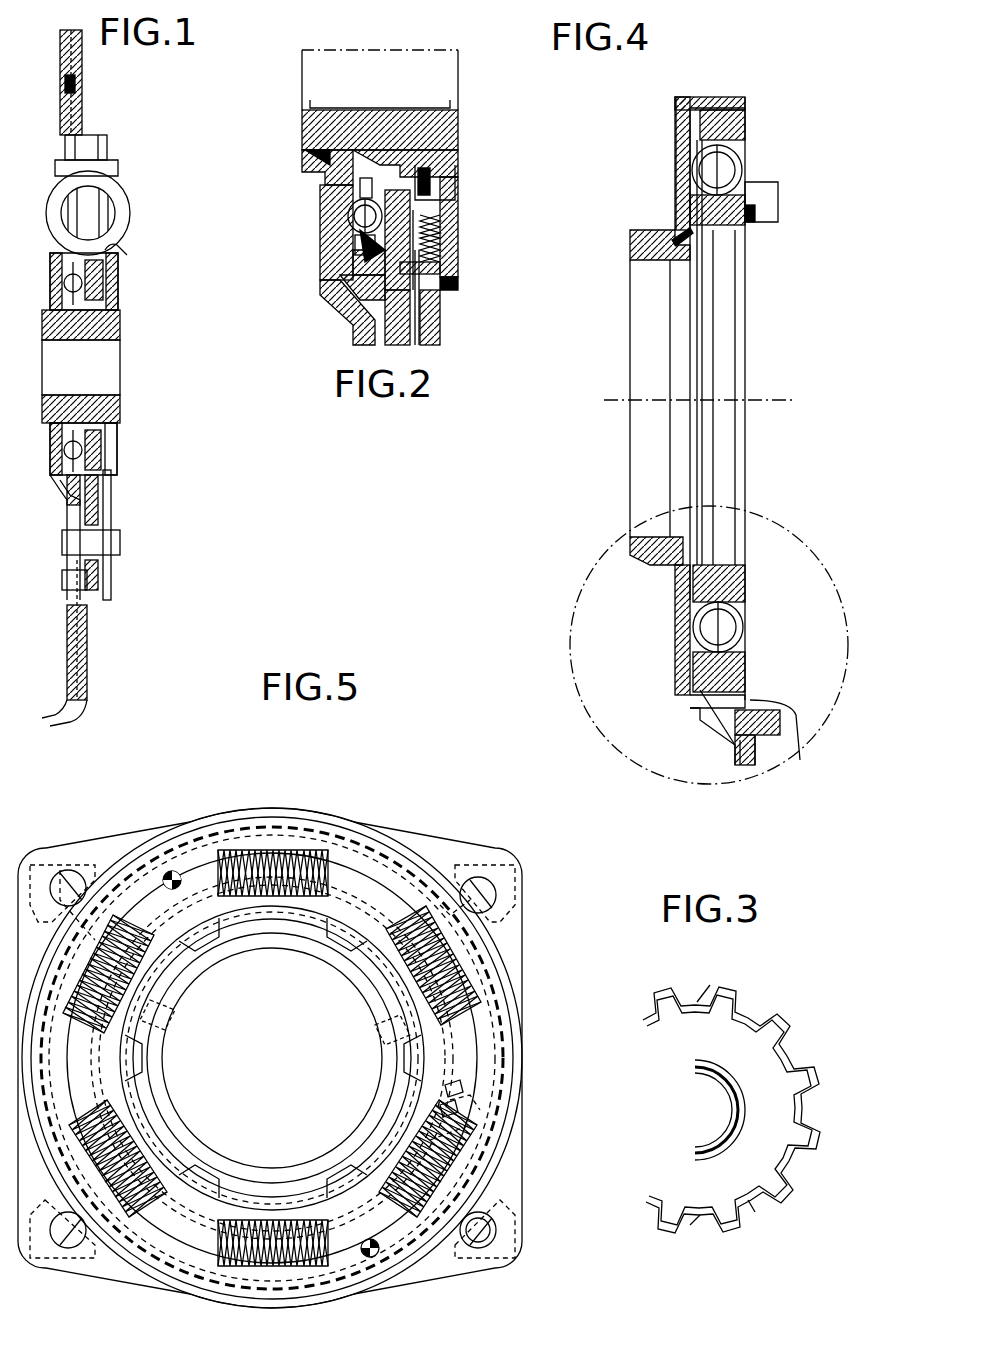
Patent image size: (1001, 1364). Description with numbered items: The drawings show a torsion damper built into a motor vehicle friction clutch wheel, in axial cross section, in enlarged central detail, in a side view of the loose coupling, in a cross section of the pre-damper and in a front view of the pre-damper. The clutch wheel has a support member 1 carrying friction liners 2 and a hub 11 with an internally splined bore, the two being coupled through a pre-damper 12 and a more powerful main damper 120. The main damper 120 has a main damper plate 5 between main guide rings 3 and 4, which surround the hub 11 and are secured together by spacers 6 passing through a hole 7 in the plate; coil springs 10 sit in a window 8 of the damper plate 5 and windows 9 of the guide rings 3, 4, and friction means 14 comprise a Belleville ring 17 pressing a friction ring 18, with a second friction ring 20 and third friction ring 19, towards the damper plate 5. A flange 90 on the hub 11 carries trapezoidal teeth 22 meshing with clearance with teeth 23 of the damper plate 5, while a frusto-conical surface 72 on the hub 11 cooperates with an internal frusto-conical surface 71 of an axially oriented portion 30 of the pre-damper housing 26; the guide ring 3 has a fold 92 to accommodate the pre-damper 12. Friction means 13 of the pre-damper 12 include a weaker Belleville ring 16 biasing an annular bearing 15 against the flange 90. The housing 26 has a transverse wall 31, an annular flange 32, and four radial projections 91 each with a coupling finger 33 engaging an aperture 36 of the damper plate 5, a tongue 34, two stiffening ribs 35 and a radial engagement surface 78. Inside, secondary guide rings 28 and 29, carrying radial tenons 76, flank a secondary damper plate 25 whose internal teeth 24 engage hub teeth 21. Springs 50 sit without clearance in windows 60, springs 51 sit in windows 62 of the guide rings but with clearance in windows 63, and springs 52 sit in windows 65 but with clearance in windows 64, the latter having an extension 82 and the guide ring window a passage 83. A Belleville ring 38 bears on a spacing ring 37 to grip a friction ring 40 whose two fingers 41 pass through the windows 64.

In FIG. 1, the support member 1 is at (78, 140).
In FIG. 1, the friction liners 2 is at (52, 718).
In FIG. 1, the main guide ring 3 is at (62, 488).
In FIG. 2, the main guide ring 3 is at (358, 300).
In FIG. 1, the main guide ring 4 is at (112, 565).
In FIG. 2, the main guide ring 4 is at (440, 315).
In FIG. 1, the main damper plate 5 is at (95, 595).
In FIG. 3, the main damper plate 5 is at (715, 968).
In FIG. 1, the spacers 6 is at (120, 530).
In FIG. 4, the spacers 6 is at (592, 718).
In FIG. 1, the hole 7 is at (100, 515).
In FIG. 1, the window 8 is at (105, 158).
In FIG. 1, the window 9 is at (115, 250).
In FIG. 1, the coil springs 10 is at (128, 205).
In FIG. 1, the hub 11 is at (122, 327).
In FIG. 2, the hub 11 is at (470, 148).
In FIG. 3, the hub 11 is at (715, 1037).
In FIG. 1, the pre-damper 12 is at (60, 262).
In FIG. 2, the pre-damper 12 is at (365, 288).
In FIG. 4, the pre-damper 12 is at (660, 190).
In FIG. 1, the friction means 13 is at (110, 428).
In FIG. 1, the friction means 14 is at (120, 440).
In FIG. 2, the annular bearing 15 is at (455, 175).
In FIG. 2, the axially acting resilient ring 16 is at (440, 200).
In FIG. 2, the axially acting resilient ring 17 is at (440, 238).
In FIG. 2, the friction ring 18 is at (445, 268).
In FIG. 2, the third friction ring 19 is at (460, 285).
In FIG. 2, the second friction ring 20 is at (448, 295).
In FIG. 3, the hub teeth 21 is at (748, 1205).
In FIG. 3, the trapezoidal teeth 22 is at (695, 990).
In FIG. 3, the teeth 23 is at (700, 1222).
In FIG. 5, the internal teeth 24 is at (260, 925).
In FIG. 4, the secondary damper plate 25 is at (725, 580).
In FIG. 4, the housing 26 is at (628, 550).
In FIG. 4, the secondary guide ring 28 is at (740, 135).
In FIG. 4, the secondary guide ring 29 is at (690, 700).
In FIG. 4, the axially oriented portion 30 is at (638, 232).
In FIG. 4, the transverse wall 31 is at (675, 140).
In FIG. 4, the annular flange 32 is at (710, 97).
In FIG. 4, the coupling fingers 33 is at (760, 745).
In FIG. 5, the coupling fingers 33 is at (478, 1245).
In FIG. 4, the tongues 34 is at (780, 712).
In FIG. 5, the tongues 34 is at (496, 1225).
In FIG. 4, the stiffening ribs 35 is at (718, 735).
In FIG. 5, the stiffening ribs 35 is at (32, 880).
In FIG. 2, the apertures 36 is at (372, 252).
In FIG. 4, the spacing ring 37 is at (728, 98).
In FIG. 4, the axially acting resilient means 38 is at (705, 715).
In FIG. 4, the friction ring 40 is at (680, 592).
In FIG. 5, the friction ring 40 is at (165, 1262).
In FIG. 5, the projections 41 is at (155, 1010).
In FIG. 5, the springs 50 is at (310, 848).
In FIG. 5, the springs 51 is at (410, 925).
In FIG. 5, the springs 52 is at (122, 915).
In FIG. 5, the windows 60 is at (235, 850).
In FIG. 5, the windows 62 is at (470, 985).
In FIG. 5, the windows 63 is at (480, 1005).
In FIG. 5, the windows 64 is at (480, 1105).
In FIG. 5, the windows 65 is at (465, 1130).
In FIG. 4, the internal frusto-conical surface 71 is at (668, 270).
In FIG. 2, the frusto-conical surface 72 is at (305, 168).
In FIG. 5, the radial tenons 76 is at (450, 900).
In FIG. 4, the radial engagement surface 78 is at (752, 760).
In FIG. 5, the extension 82 is at (462, 1085).
In FIG. 5, the circumferential extension 83 is at (460, 1112).
In FIG. 2, the flange 90 is at (430, 145).
In FIG. 4, the radial projections 91 is at (735, 765).
In FIG. 5, the radial projections 91 is at (70, 845).
In FIG. 2, the fold 92 is at (318, 275).
In FIG. 1, the main damper 120 is at (130, 165).